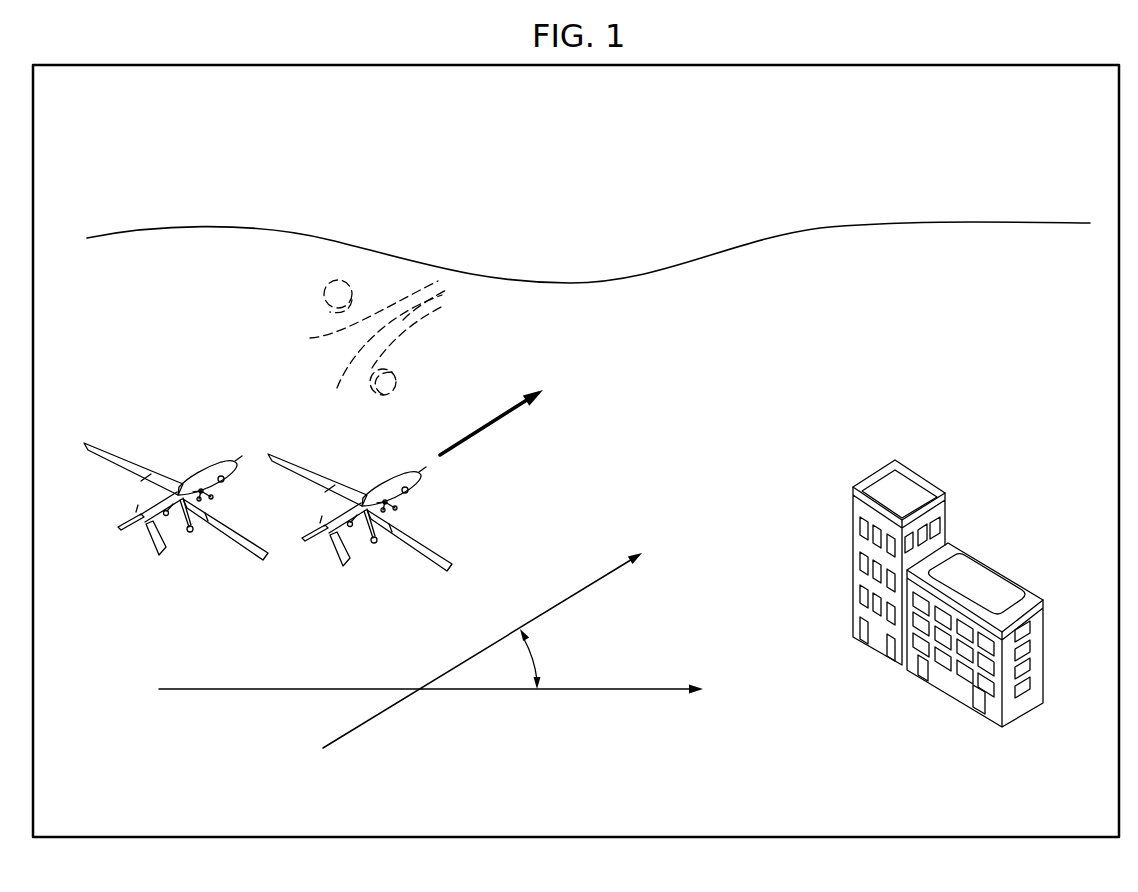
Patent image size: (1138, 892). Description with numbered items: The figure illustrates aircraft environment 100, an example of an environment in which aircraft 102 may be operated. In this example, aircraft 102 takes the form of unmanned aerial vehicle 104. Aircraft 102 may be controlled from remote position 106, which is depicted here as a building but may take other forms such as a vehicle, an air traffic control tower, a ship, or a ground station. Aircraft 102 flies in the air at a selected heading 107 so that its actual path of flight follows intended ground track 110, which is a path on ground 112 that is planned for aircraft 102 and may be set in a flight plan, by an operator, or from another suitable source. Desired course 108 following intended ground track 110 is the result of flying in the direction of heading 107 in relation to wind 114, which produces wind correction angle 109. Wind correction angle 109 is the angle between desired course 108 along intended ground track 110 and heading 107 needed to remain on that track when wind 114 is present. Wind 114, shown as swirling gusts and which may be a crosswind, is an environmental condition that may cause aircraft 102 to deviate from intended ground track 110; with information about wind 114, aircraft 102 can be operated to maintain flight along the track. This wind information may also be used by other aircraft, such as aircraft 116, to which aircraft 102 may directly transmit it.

The aircraft environment 100 is at (800, 178).
The aircraft 102 is at (360, 496).
The unmanned aerial vehicle 104 is at (392, 472).
The remote position 106 is at (1043, 650).
The heading 107 is at (483, 423).
The desired course 108 is at (593, 690).
The wind correction angle 109 is at (537, 658).
The intended ground track 110 is at (462, 690).
The ground 112 is at (593, 792).
The wind 114 is at (297, 300).
The aircraft 116 is at (200, 469).